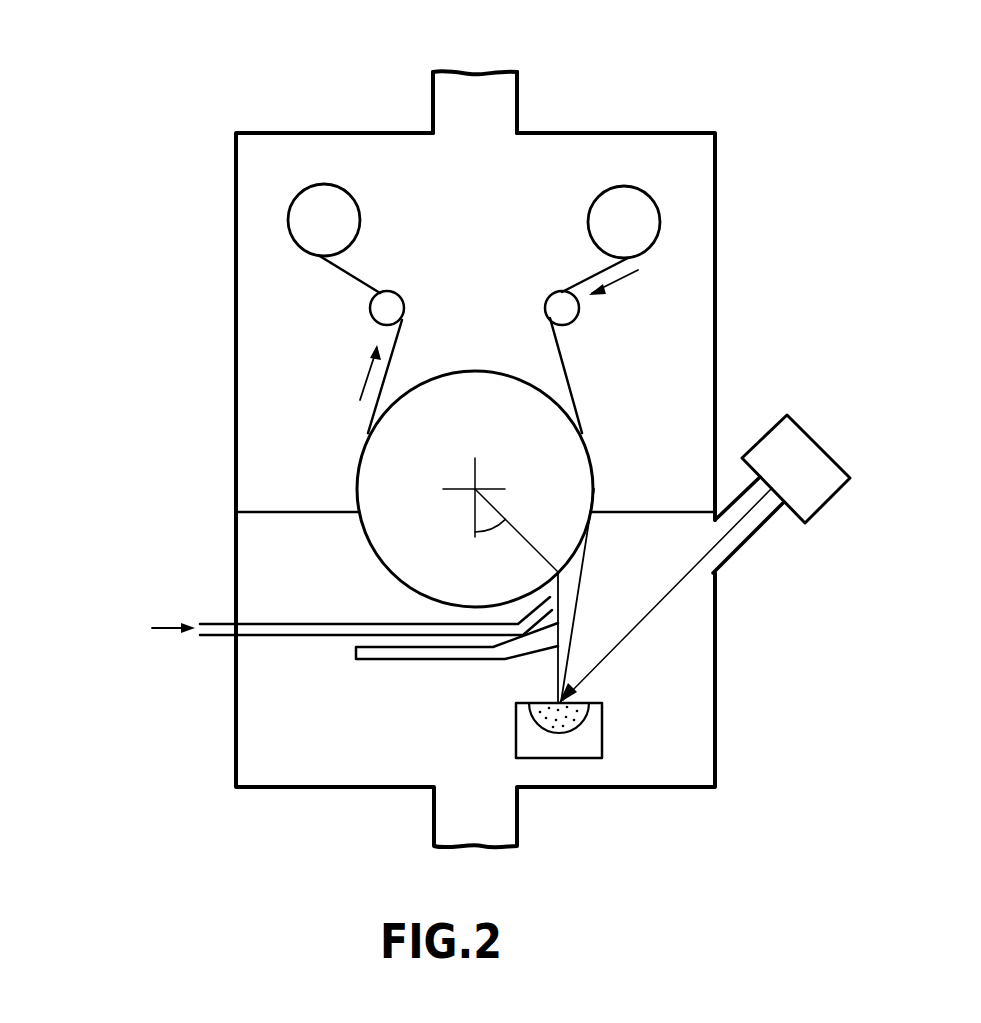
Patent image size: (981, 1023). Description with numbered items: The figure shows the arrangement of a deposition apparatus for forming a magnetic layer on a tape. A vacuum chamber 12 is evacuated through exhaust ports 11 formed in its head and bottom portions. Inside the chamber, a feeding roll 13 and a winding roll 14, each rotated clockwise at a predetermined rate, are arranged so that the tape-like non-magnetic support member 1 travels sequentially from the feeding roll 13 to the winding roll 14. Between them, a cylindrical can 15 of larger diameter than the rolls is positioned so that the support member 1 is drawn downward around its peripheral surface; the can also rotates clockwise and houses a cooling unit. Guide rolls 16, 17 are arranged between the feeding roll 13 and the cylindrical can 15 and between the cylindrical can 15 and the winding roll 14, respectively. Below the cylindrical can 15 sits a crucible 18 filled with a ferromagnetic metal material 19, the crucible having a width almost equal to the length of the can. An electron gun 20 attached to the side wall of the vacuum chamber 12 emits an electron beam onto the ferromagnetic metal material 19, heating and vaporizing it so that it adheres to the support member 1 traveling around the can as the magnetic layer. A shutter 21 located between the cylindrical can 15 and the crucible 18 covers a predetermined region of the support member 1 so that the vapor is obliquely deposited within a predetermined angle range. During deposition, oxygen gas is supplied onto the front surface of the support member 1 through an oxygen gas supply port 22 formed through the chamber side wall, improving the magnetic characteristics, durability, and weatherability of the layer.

The non-magnetic support member 1 is at (573, 402).
The exhaust port 11 is at (474, 85).
The vacuum chamber 12 is at (236, 388).
The feeding roll 13 is at (630, 193).
The winding roll 14 is at (324, 190).
The cylindrical can 15 is at (470, 378).
The guide roll 16 is at (577, 312).
The guide roll 17 is at (371, 306).
The crucible 18 is at (585, 752).
The ferromagnetic metal material 19 is at (555, 733).
The electron gun 20 is at (800, 428).
The shutter 21 is at (400, 661).
The oxygen gas supply port 22 is at (283, 637).